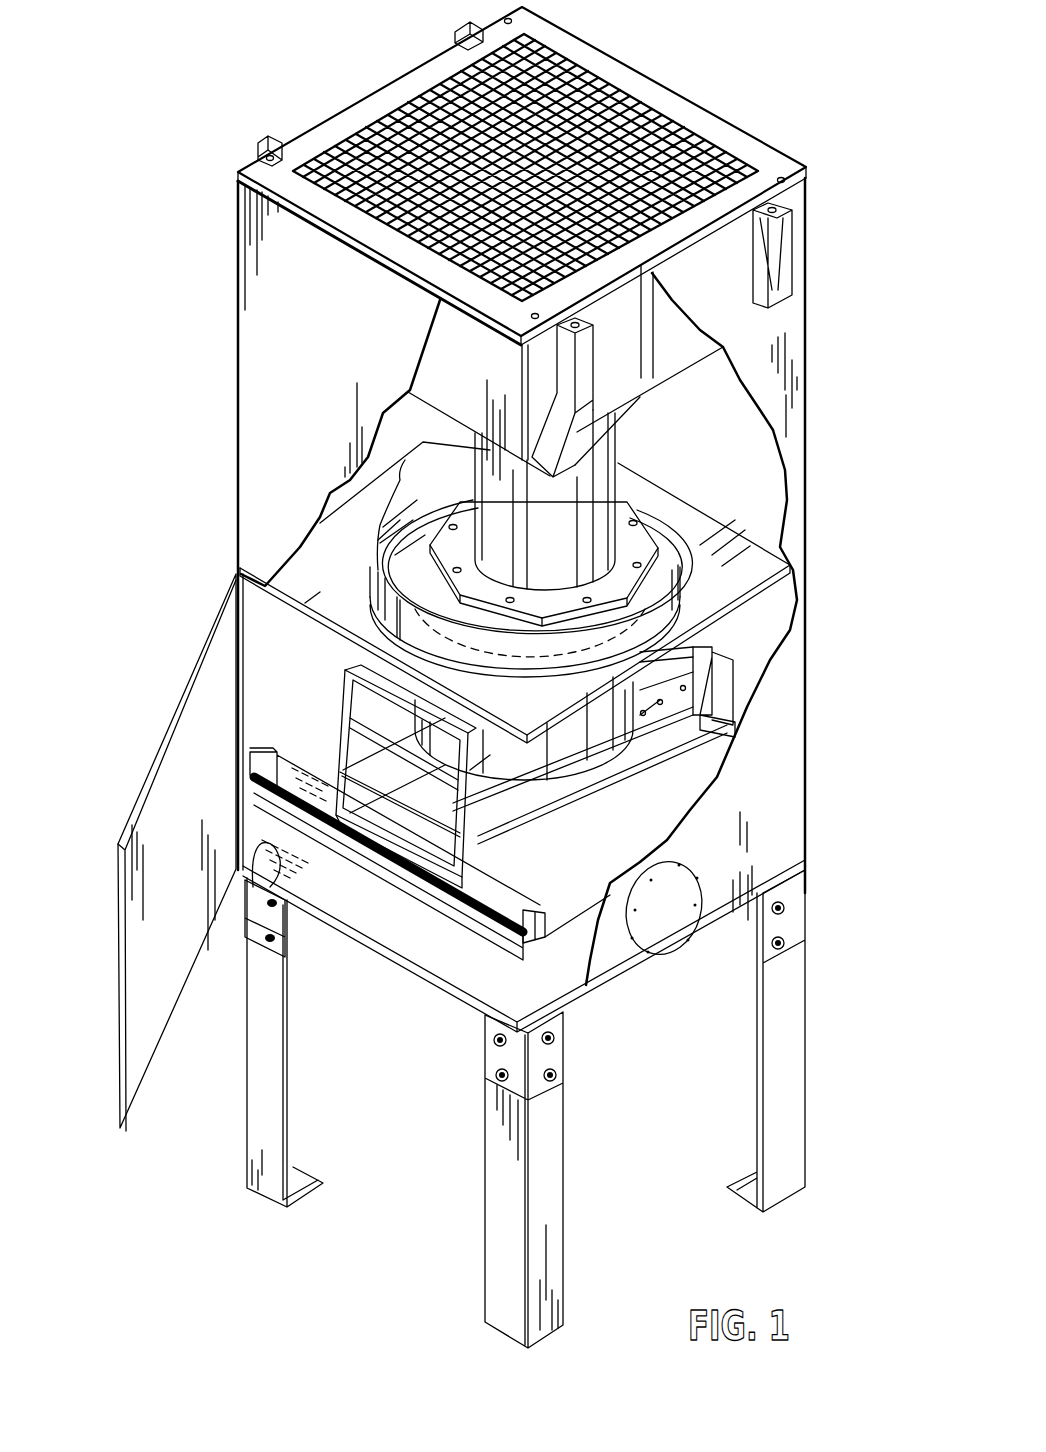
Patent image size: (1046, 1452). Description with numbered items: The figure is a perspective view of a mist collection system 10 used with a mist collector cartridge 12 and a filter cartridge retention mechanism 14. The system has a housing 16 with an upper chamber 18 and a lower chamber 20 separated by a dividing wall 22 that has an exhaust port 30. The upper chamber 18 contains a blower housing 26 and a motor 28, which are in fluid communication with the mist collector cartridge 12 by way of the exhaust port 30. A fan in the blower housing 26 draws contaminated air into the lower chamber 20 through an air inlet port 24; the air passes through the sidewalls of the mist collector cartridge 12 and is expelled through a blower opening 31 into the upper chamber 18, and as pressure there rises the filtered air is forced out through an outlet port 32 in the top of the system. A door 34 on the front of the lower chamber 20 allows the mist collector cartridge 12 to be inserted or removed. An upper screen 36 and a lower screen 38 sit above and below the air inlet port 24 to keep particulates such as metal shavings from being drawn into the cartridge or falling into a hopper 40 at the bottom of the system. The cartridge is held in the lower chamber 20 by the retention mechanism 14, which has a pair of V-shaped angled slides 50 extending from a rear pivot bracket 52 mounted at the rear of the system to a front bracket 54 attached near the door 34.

The mist collection system 10 is at (778, 115).
The mist collector cartridge 12 is at (597, 737).
The filter cartridge retention mechanism 14 is at (334, 679).
The housing 16 is at (806, 332).
The upper chamber 18 is at (720, 458).
The lower chamber 20 is at (748, 640).
The dividing wall 22 is at (772, 550).
The air inlet port 24 is at (660, 930).
The blower housing 26 is at (372, 590).
The motor 28 is at (475, 436).
The exhaust port 30 is at (505, 678).
The blower opening 31 is at (385, 505).
The outlet port 32 is at (628, 110).
The door 34 is at (157, 1010).
The upper screen 36 is at (310, 773).
The lower screen 38 is at (298, 928).
The hopper 40 is at (448, 1012).
The V-shaped angled slides 50 is at (567, 797).
The rear pivot bracket 52 is at (707, 693).
The front bracket 54 is at (503, 898).